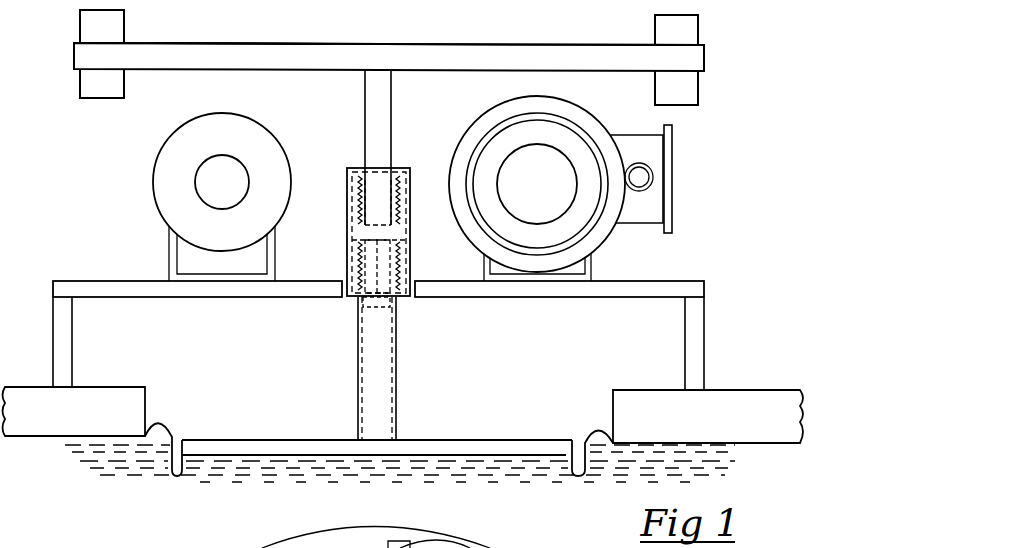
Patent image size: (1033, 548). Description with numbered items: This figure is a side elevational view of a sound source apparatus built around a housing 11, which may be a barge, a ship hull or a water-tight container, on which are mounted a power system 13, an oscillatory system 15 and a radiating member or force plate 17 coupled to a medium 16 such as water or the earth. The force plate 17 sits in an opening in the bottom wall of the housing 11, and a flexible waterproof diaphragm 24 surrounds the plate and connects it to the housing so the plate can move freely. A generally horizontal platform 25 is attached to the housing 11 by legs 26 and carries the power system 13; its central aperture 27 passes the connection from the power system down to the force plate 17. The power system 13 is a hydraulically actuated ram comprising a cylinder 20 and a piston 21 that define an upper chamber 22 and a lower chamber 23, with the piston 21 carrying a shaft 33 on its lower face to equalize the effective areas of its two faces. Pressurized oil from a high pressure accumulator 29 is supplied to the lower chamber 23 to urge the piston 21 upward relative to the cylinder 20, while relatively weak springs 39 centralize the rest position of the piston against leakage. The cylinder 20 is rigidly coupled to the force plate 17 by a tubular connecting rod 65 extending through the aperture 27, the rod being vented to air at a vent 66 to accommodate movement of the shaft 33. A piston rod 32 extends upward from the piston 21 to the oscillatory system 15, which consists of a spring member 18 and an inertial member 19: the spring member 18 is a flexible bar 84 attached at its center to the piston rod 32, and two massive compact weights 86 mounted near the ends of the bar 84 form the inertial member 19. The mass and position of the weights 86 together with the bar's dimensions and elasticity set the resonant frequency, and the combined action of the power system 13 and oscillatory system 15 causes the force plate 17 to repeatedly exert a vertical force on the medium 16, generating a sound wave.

The housing 11 is at (12, 386).
The power system 13 is at (686, 158).
The oscillatory system 15 is at (505, 34).
The medium 16 is at (449, 495).
The force plate 17 is at (453, 440).
The spring member 18 is at (299, 41).
The inertial member 19 is at (78, 26).
The hydraulically actuated cylinder 20 is at (347, 182).
The piston 21 is at (396, 210).
The upper chamber 22 is at (409, 182).
The lower chamber 23 is at (410, 257).
The flexible waterproof diaphragm 24 is at (172, 434).
The platform 25 is at (216, 298).
The legs 26 is at (72, 333).
The central aperture 27 is at (400, 300).
The high pressure accumulator 29 is at (162, 143).
The piston rod 32 is at (365, 97).
The shaft 33 is at (352, 272).
The springs 39 is at (410, 218).
The connecting rod 65 is at (398, 360).
The vent 66 is at (358, 340).
The flexible bar 84 is at (183, 42).
The weights 86 is at (123, 30).